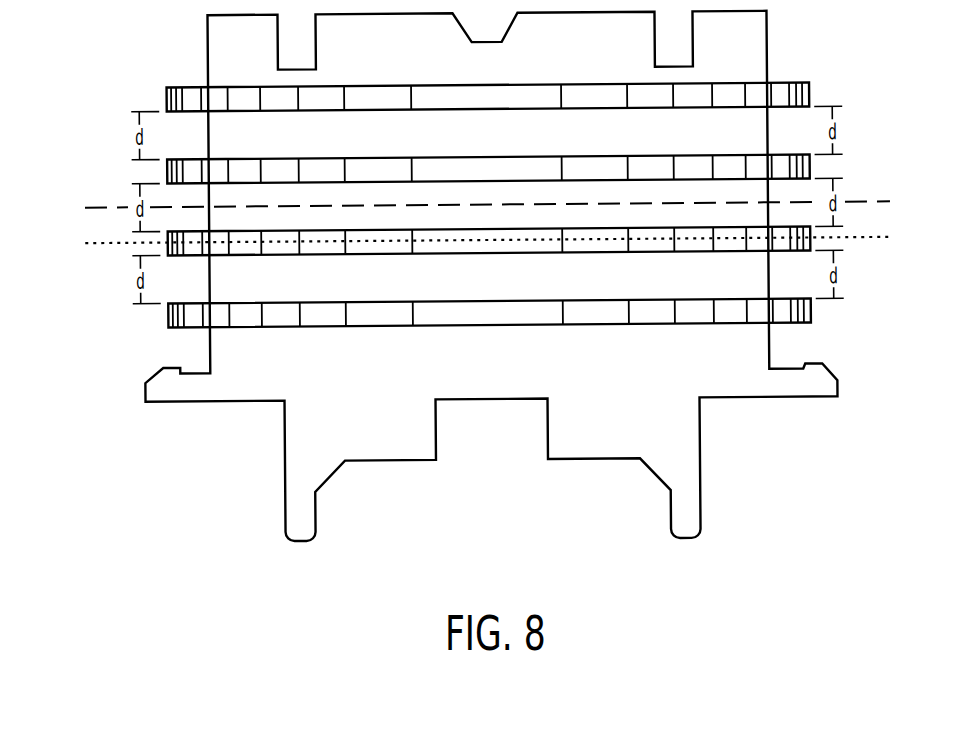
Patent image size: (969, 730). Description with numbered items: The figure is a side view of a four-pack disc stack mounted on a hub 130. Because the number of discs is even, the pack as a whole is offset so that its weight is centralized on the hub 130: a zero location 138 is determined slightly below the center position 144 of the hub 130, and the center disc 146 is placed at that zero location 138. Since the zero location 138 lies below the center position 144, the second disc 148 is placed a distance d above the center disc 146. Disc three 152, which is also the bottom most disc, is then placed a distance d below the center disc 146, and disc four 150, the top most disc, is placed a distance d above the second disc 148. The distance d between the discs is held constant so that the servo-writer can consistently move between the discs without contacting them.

The hub 130 is at (237, 361).
The zero location 138 is at (99, 241).
The center position 144 is at (99, 204).
The center disc 146 is at (669, 254).
The second disc 148 is at (669, 156).
The disc four 150 is at (784, 85).
The disc three 152 is at (788, 326).